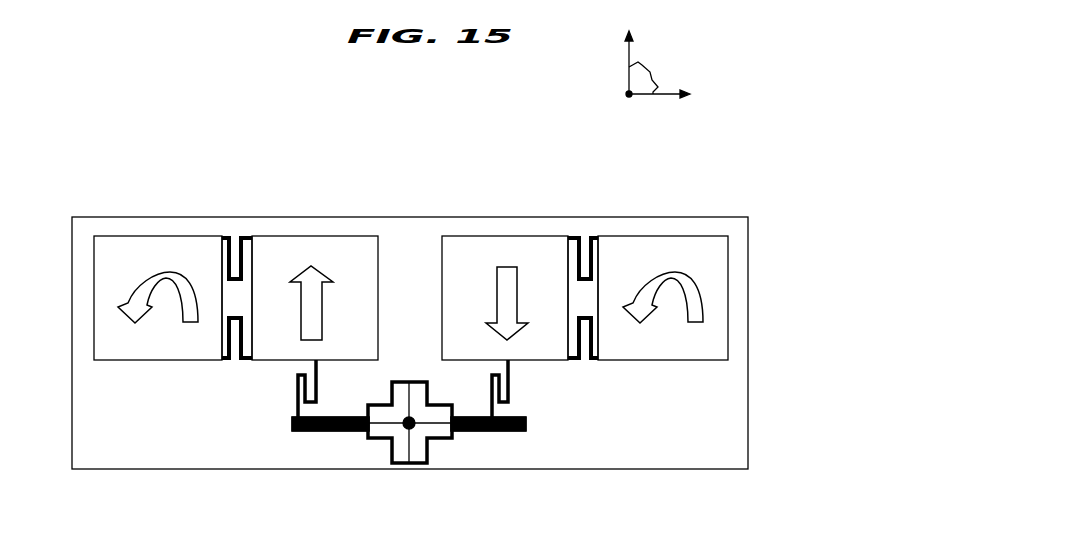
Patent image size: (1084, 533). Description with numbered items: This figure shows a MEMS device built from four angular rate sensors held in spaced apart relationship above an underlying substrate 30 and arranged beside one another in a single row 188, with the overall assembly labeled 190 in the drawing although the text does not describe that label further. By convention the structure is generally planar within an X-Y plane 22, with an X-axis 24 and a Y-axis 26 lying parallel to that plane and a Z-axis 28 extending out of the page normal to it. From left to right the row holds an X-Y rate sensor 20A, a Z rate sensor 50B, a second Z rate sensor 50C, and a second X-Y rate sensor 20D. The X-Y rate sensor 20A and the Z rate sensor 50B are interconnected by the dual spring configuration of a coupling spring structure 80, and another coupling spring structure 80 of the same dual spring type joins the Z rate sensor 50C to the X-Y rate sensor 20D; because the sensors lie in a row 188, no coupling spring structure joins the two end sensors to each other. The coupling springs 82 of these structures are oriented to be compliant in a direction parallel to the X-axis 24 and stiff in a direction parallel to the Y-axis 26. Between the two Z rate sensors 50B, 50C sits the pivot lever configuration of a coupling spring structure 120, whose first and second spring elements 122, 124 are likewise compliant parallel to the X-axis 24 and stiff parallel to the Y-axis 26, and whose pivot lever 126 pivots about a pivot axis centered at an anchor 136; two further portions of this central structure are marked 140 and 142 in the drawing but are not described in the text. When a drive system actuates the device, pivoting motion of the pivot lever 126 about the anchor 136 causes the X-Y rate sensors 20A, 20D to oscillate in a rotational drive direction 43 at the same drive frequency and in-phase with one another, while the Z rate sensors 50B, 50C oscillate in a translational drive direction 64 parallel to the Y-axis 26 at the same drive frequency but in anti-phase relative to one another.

The X-Y plane 22 is at (650, 72).
The X-axis 24 is at (668, 91).
The Y-axis 26 is at (628, 50).
The Z-axis 28 is at (629, 98).
The substrate 30 is at (98, 219).
The X-Y rate sensor 20A is at (138, 242).
The X-Y rate sensor 20D is at (670, 242).
The Z rate sensor 50B is at (282, 242).
The Z rate sensor 50C is at (480, 242).
The rotational drive direction 43 is at (147, 280).
The translational drive direction 64 is at (320, 310).
The coupling spring structure 80 is at (239, 227).
The coupling springs 82 is at (244, 252).
The coupling spring structure 120 is at (470, 438).
The first spring element 122 is at (512, 394).
The second spring element 124 is at (296, 400).
The pivot lever 126 is at (525, 430).
The anchor 136 is at (409, 425).
The arm 140 is at (473, 432).
The arm 142 is at (352, 431).
The row 188 is at (736, 303).
The MEMS device 190 is at (228, 528).